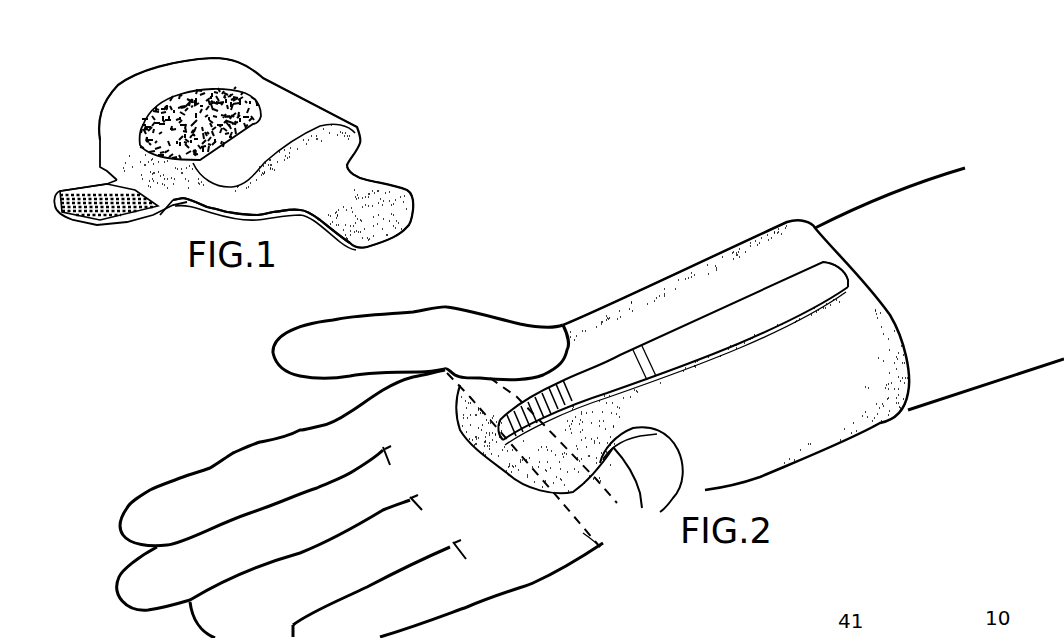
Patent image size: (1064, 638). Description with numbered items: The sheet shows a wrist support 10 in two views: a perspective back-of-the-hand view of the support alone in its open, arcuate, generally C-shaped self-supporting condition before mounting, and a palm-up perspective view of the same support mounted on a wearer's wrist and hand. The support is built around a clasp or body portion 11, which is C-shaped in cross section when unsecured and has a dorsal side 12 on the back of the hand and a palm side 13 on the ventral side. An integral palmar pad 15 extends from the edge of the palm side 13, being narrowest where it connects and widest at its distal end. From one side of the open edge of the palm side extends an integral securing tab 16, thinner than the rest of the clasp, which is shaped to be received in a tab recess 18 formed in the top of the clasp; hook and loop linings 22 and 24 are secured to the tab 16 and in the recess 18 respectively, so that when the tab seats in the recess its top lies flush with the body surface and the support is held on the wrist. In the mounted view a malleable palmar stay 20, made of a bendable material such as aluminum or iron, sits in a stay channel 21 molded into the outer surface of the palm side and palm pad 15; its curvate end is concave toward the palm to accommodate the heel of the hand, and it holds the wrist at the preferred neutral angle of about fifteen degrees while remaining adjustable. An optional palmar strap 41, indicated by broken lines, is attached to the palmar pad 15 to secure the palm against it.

In FIG. 1, the wrist support 10 is at (395, 145).
In FIG. 2, the wrist support 10 is at (893, 460).
In FIG. 1, the body portion 11 is at (265, 78).
In FIG. 1, the dorsal side 12 is at (143, 88).
In FIG. 1, the palm side 13 is at (200, 212).
In FIG. 2, the palm side 13 is at (678, 310).
In FIG. 1, the palmar pad 15 is at (413, 192).
In FIG. 2, the palmar pad 15 is at (642, 508).
In FIG. 1, the securing tab 16 is at (83, 190).
In FIG. 1, the tab recess 18 is at (220, 85).
In FIG. 2, the palmar stay 20 is at (772, 297).
In FIG. 2, the stay channel 21 is at (850, 275).
In FIG. 1, the hook and loop lining 22 is at (93, 223).
In FIG. 1, the hook and loop lining 24 is at (275, 103).
In FIG. 2, the palmar strap 41 is at (587, 540).